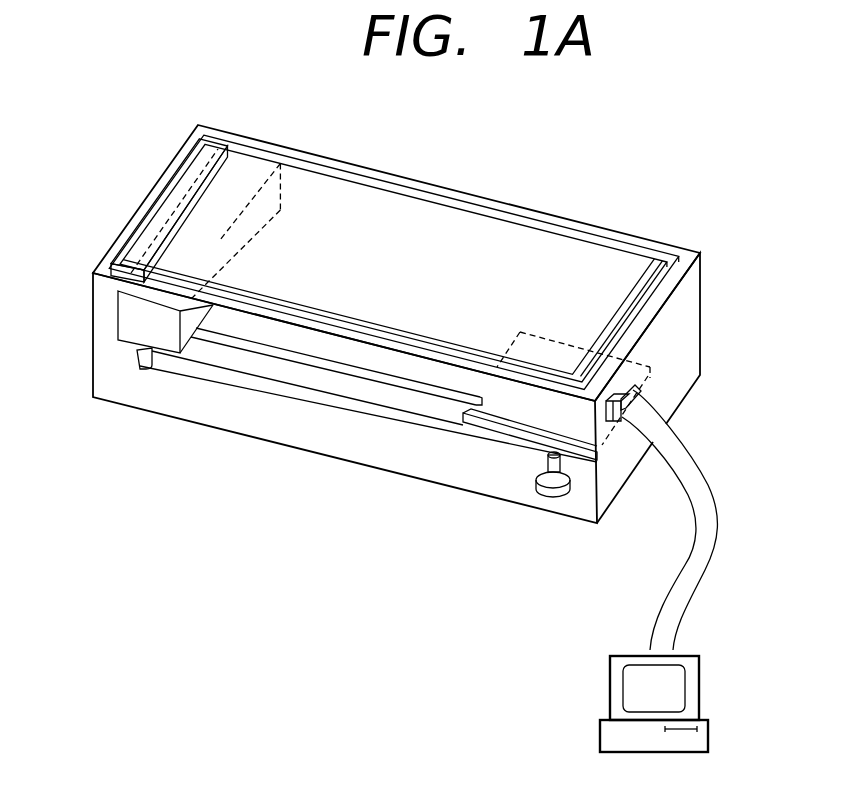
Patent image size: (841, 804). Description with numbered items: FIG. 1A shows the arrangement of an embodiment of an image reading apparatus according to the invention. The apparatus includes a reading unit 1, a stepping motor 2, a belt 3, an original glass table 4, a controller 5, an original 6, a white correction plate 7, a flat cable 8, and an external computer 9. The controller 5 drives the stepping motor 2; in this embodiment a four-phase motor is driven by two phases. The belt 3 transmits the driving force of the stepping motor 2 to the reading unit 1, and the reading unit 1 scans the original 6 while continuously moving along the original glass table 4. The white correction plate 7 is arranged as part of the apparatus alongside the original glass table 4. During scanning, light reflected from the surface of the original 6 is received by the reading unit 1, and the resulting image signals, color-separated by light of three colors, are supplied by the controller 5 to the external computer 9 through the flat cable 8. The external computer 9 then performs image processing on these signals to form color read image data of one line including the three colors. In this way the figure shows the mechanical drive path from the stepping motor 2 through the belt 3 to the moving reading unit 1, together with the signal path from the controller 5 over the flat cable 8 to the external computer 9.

The reading unit 1 is at (120, 322).
The stepping motor 2 is at (548, 497).
The belt 3 is at (333, 407).
The original glass table 4 is at (663, 245).
The controller 5 is at (500, 415).
The original 6 is at (503, 215).
The white correction plate 7 is at (190, 163).
The flat cable 8 is at (267, 355).
The external computer 9 is at (700, 675).